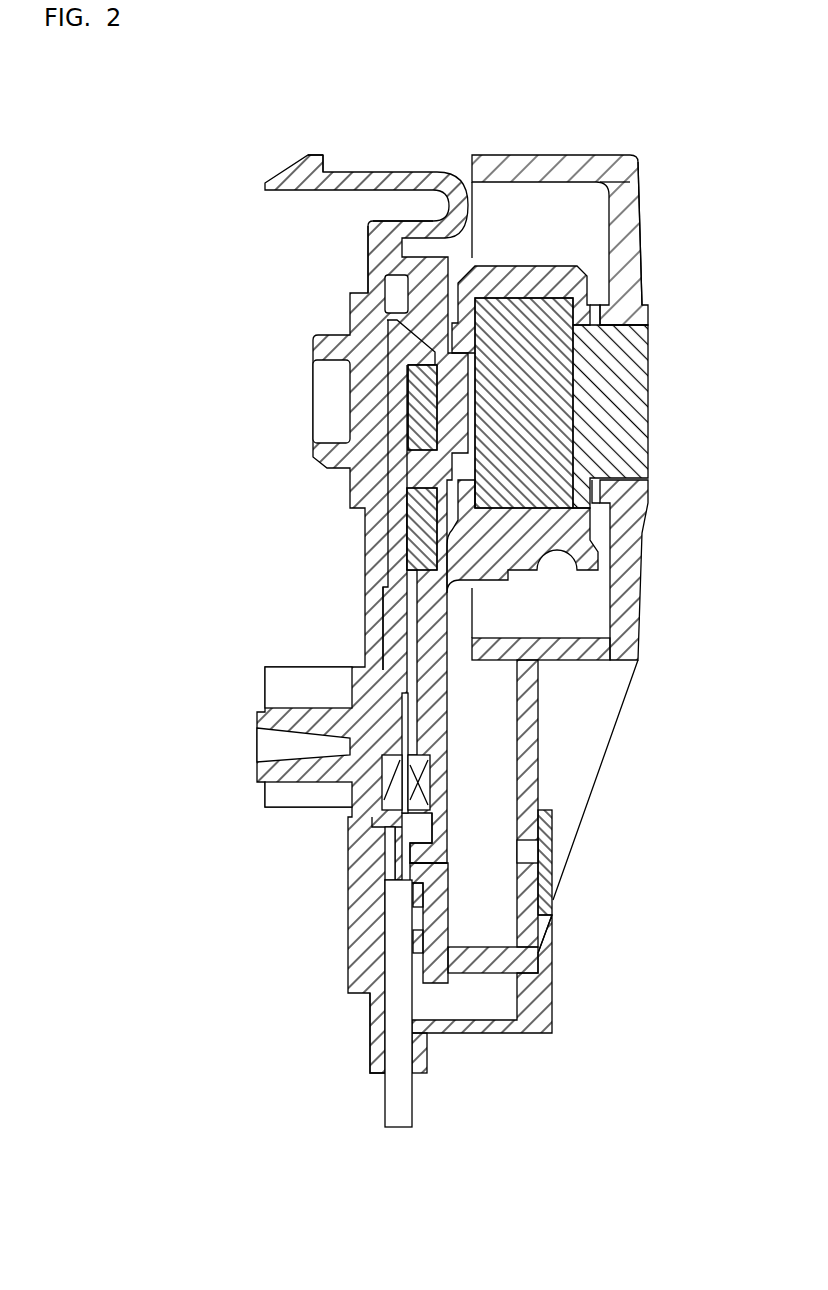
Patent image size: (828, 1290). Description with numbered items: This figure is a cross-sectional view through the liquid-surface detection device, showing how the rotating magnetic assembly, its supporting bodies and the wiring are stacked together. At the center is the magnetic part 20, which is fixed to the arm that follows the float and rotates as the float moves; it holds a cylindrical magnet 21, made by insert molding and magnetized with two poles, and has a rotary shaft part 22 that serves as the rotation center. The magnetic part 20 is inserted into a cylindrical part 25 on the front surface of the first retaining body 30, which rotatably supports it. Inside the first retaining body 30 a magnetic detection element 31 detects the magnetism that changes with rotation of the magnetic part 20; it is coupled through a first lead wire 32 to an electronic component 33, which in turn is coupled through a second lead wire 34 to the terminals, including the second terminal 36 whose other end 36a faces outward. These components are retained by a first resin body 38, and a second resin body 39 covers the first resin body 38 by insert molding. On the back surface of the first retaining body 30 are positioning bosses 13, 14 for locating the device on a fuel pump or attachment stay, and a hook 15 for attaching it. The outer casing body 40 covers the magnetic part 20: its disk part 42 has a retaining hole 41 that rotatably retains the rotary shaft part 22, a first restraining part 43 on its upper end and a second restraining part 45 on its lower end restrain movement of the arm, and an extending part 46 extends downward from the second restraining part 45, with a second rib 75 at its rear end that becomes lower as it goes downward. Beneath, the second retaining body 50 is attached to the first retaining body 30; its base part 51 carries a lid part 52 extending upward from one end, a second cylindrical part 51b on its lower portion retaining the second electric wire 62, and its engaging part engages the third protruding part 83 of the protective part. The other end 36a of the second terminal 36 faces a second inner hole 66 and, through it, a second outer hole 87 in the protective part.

The positioning boss 13 is at (313, 350).
The positioning boss 14 is at (265, 690).
The hook 15 is at (345, 186).
The magnetic part 20 is at (567, 300).
The magnet 21 is at (525, 300).
The rotary shaft part 22 is at (648, 410).
The cylindrical part 25 is at (490, 352).
The first retaining body 30 is at (411, 160).
The magnetic detection element 31 is at (407, 405).
The first lead wire 32 is at (397, 478).
The electronic component 33 is at (392, 552).
The second lead wire 34 is at (397, 637).
The second terminal 36 is at (447, 750).
The other end of the second terminal 36a is at (435, 846).
The first resin body 38 is at (385, 298).
The second resin body 39 is at (368, 268).
The outer casing body 40 is at (540, 155).
The retaining hole 41 is at (620, 330).
The disk part 42 is at (641, 226).
The first restraining part 43 is at (597, 160).
The second restraining part 45 is at (543, 638).
The extending part 46 is at (540, 747).
The second retaining body 50 is at (322, 1050).
The base part 51 is at (475, 1035).
The second cylindrical part 51b is at (428, 1060).
The lid part 52 is at (348, 905).
The second electric wire 62 is at (400, 1128).
The second inner hole 66 is at (449, 850).
The second rib 75 is at (620, 710).
The third protruding part 83 is at (553, 927).
The second outer hole 87 is at (540, 855).